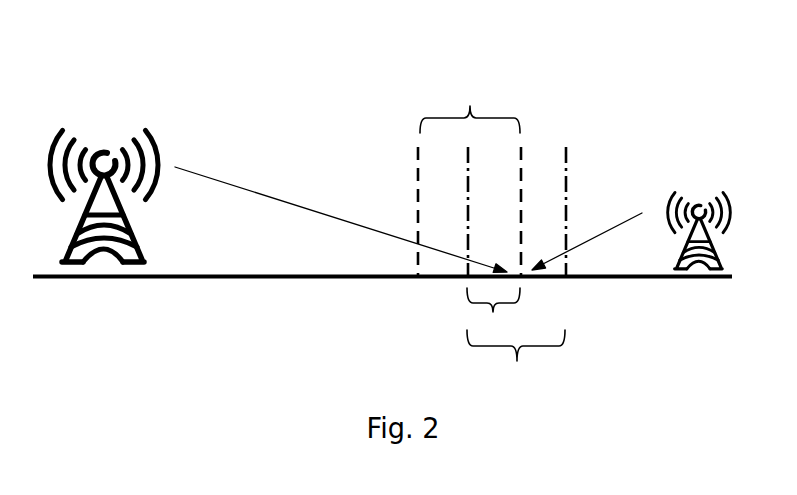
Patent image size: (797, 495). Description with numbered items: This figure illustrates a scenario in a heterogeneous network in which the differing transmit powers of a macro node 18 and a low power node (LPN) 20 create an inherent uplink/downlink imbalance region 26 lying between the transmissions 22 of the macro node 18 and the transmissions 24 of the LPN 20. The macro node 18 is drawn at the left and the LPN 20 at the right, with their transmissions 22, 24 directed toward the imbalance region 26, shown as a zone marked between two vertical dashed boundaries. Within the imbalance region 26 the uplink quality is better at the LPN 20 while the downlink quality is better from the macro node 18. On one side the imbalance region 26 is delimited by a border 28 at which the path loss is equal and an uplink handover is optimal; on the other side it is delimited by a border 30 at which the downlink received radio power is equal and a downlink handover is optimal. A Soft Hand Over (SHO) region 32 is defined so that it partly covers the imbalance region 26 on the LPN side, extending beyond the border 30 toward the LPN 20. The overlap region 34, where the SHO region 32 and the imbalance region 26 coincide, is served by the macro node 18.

The macro node 18 is at (93, 253).
The LPN 20 is at (698, 265).
The transmissions of macro node 22 is at (298, 207).
The transmissions of LPN 24 is at (600, 233).
The imbalance region 26 is at (470, 103).
The border 28 is at (417, 168).
The border 30 is at (530, 173).
The Soft Hand Over region 32 is at (517, 362).
The overlap region 34 is at (493, 312).